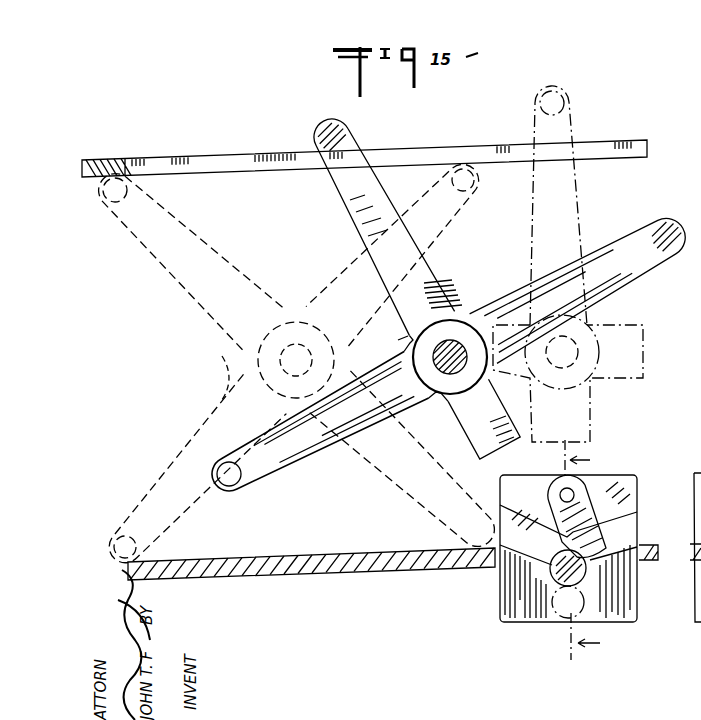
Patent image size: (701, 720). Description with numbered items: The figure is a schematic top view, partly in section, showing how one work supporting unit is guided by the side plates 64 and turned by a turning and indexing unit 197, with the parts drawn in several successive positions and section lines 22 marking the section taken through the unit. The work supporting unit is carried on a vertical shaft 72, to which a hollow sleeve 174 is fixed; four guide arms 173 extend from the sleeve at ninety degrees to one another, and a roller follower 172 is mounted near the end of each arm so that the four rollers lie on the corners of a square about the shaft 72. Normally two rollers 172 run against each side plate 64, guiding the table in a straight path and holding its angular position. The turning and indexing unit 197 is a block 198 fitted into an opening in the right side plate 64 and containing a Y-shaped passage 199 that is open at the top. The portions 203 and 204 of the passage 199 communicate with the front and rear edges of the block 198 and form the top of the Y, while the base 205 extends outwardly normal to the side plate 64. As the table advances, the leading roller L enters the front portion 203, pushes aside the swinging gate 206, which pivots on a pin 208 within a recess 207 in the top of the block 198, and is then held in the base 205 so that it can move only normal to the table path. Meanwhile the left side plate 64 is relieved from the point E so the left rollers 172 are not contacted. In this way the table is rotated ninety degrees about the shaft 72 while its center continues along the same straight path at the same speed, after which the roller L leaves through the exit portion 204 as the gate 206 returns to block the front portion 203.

The side plate 64 is at (123, 163).
The vertical shaft 72 is at (455, 350).
The roller follower 172 is at (110, 207).
The guide arm 173 is at (222, 360).
The hollow sleeve 174 is at (400, 339).
The block 198 is at (640, 476).
The front portion of the Y-shaped passage 203 is at (547, 512).
The rear portion of the Y-shaped passage 204 is at (598, 530).
The base of the Y-shaped passage 205 is at (585, 600).
The swinging gate 206 is at (612, 534).
The recess 207 is at (538, 524).
The pin 208 is at (582, 494).
The passage 199 is at (497, 573).
The turning and indexing unit 197 is at (500, 631).
The section line 22 is at (560, 550).
The point E is at (131, 161).
The leading roller L is at (488, 508).